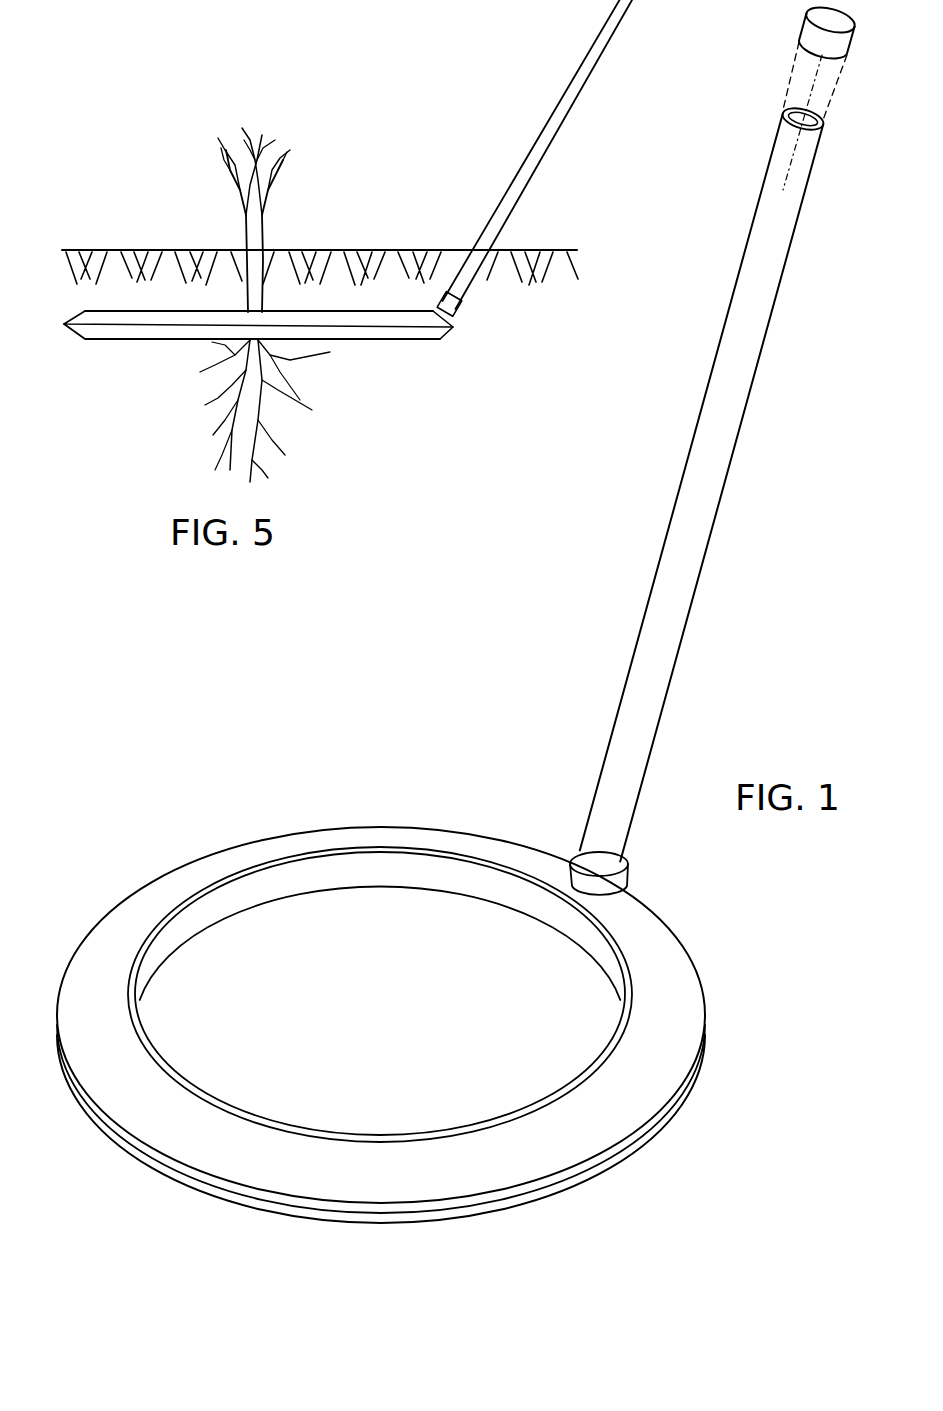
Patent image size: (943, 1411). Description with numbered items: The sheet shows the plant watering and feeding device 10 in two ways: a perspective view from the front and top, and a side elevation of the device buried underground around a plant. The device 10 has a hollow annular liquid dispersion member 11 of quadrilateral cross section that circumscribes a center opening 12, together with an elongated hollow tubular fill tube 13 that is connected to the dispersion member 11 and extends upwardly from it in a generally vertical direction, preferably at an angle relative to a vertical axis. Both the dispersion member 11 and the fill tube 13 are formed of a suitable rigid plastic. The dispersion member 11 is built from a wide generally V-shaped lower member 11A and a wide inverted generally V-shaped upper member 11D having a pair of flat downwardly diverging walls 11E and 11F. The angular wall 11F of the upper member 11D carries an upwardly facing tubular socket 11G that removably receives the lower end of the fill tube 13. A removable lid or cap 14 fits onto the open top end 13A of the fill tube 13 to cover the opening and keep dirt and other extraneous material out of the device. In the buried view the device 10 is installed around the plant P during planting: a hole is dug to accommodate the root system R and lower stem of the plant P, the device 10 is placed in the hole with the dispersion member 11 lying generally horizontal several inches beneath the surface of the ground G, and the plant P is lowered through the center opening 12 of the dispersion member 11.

In FIG. 5, the plant watering and feeding device 10 is at (372, 150).
In FIG. 1, the plant watering and feeding device 10 is at (480, 690).
In FIG. 5, the liquid dispersion member 11 is at (64, 313).
In FIG. 1, the liquid dispersion member 11 is at (127, 892).
In FIG. 5, the lower member 11A is at (116, 341).
In FIG. 1, the lower member 11A is at (238, 1197).
In FIG. 5, the upper member 11D is at (131, 311).
In FIG. 1, the upper member 11D is at (690, 1006).
In FIG. 1, the downwardly diverging wall 11E is at (213, 908).
In FIG. 1, the downwardly diverging wall 11F is at (683, 1051).
In FIG. 1, the tubular socket 11G is at (600, 898).
In FIG. 1, the center opening 12 is at (418, 1018).
In FIG. 5, the fill tube 13 is at (543, 135).
In FIG. 1, the fill tube 13 is at (690, 572).
In FIG. 1, the open top end 13A is at (826, 108).
In FIG. 1, the cap 14 is at (808, 37).
In FIG. 5, the plant P is at (268, 230).
In FIG. 5, the ground G is at (378, 250).
In FIG. 5, the root system R is at (305, 405).